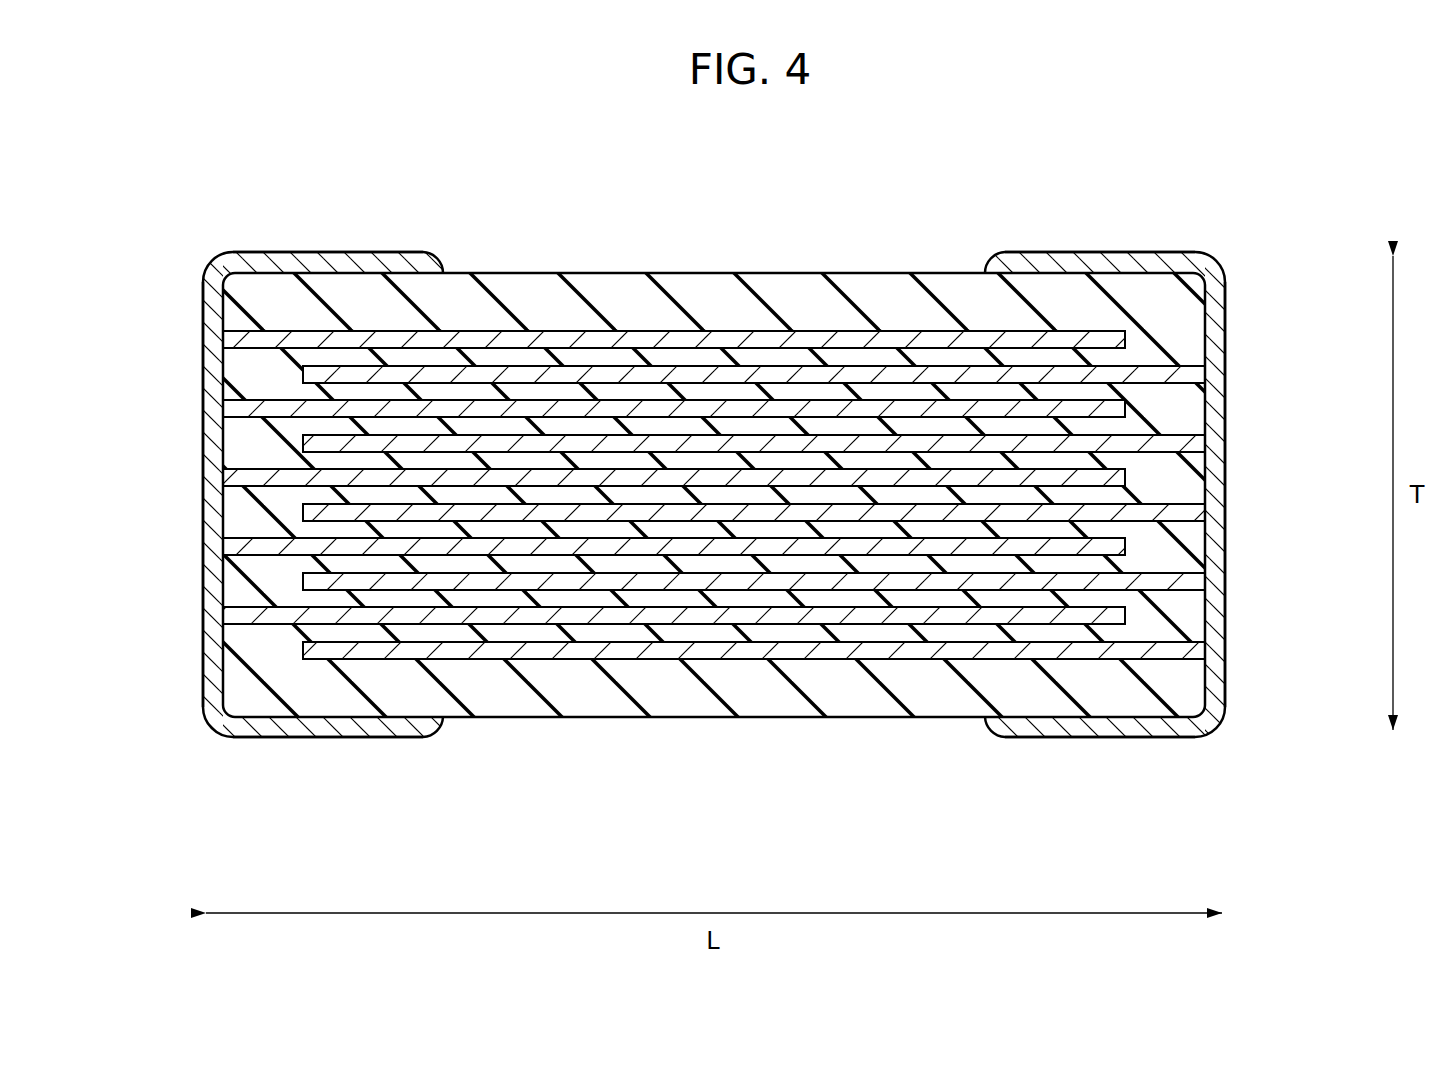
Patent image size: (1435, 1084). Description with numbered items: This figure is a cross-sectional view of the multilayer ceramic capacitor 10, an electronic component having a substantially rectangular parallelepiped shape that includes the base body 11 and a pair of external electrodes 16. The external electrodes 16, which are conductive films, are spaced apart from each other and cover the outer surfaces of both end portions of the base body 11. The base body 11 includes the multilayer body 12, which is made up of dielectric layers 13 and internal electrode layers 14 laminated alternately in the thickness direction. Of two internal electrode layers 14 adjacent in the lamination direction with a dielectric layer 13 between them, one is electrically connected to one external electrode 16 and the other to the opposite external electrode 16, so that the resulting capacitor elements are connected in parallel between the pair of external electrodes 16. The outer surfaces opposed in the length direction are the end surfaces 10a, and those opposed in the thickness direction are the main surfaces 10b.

The multilayer ceramic capacitor 10 is at (714, 486).
The end surfaces 10a is at (190, 371).
The main surfaces 10b is at (471, 230).
The base body 11 is at (714, 434).
The multilayer body 12 is at (714, 434).
The dielectric layers 13 is at (633, 295).
The internal electrode layers 14 is at (718, 340).
The external electrodes 16 is at (211, 528).